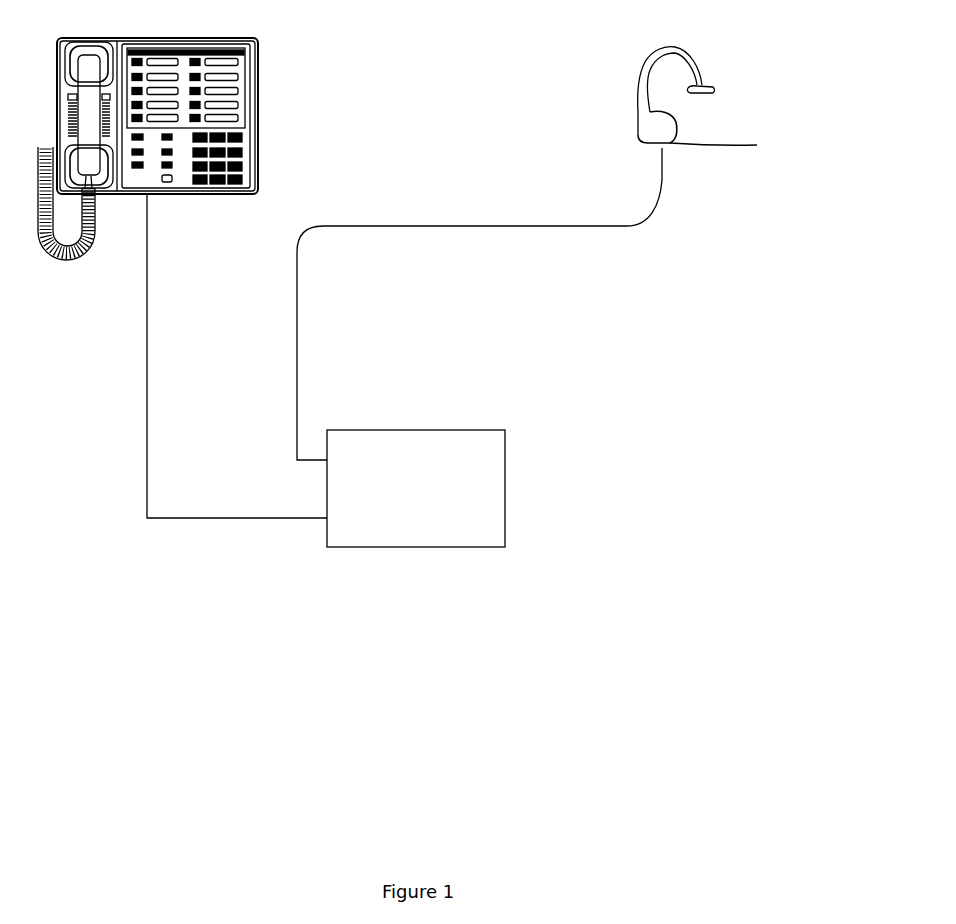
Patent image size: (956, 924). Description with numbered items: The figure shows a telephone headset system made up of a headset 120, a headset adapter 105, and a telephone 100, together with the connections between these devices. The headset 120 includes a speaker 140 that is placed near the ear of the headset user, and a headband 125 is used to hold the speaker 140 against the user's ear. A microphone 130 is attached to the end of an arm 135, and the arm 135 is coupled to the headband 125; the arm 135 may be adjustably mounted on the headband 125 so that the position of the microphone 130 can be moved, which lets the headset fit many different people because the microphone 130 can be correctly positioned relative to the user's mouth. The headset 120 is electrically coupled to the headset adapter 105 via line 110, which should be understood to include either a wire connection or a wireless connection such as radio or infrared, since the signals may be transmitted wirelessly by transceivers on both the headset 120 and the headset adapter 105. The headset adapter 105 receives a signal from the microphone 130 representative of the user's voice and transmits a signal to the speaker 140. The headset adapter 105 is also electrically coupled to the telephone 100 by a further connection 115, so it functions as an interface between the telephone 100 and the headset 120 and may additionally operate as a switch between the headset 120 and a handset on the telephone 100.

The telephone 100 is at (258, 65).
The headset adapter 105 is at (443, 428).
The line 110 is at (297, 438).
The telephone cable to adapter 115 is at (147, 454).
The headset 120 is at (637, 187).
The headband 125 is at (643, 72).
The microphone 130 is at (757, 145).
The arm 135 is at (717, 150).
The speaker 140 is at (637, 132).